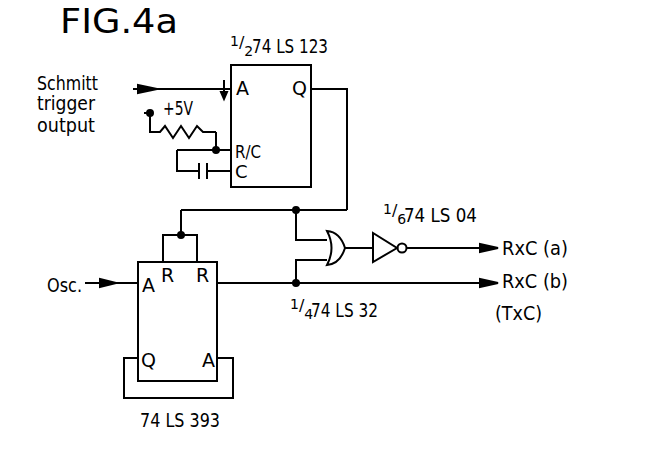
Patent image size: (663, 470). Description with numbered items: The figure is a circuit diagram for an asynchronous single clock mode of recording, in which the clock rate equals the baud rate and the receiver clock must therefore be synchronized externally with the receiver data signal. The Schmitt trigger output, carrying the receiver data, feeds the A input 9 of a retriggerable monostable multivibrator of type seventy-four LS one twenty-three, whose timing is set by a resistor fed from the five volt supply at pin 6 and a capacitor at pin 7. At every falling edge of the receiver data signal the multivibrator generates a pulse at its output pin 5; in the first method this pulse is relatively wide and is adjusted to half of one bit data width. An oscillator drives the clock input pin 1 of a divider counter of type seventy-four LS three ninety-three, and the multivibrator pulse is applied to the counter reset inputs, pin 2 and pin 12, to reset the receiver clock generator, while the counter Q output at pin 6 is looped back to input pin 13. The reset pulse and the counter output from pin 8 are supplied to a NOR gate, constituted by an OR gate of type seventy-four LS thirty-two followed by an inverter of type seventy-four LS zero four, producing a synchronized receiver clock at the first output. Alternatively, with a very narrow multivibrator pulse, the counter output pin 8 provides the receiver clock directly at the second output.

The A input of monostable multivibrator 9 is at (194, 83).
The monostable multivibrator output pin 5 is at (329, 138).
The pin 6 is at (177, 261).
The pin 7 is at (219, 181).
The pin 1 is at (111, 273).
The pin 2 is at (165, 248).
The pin 12 is at (204, 236).
The receiver clock generator output pin 8 is at (256, 271).
The pin 13 is at (212, 366).